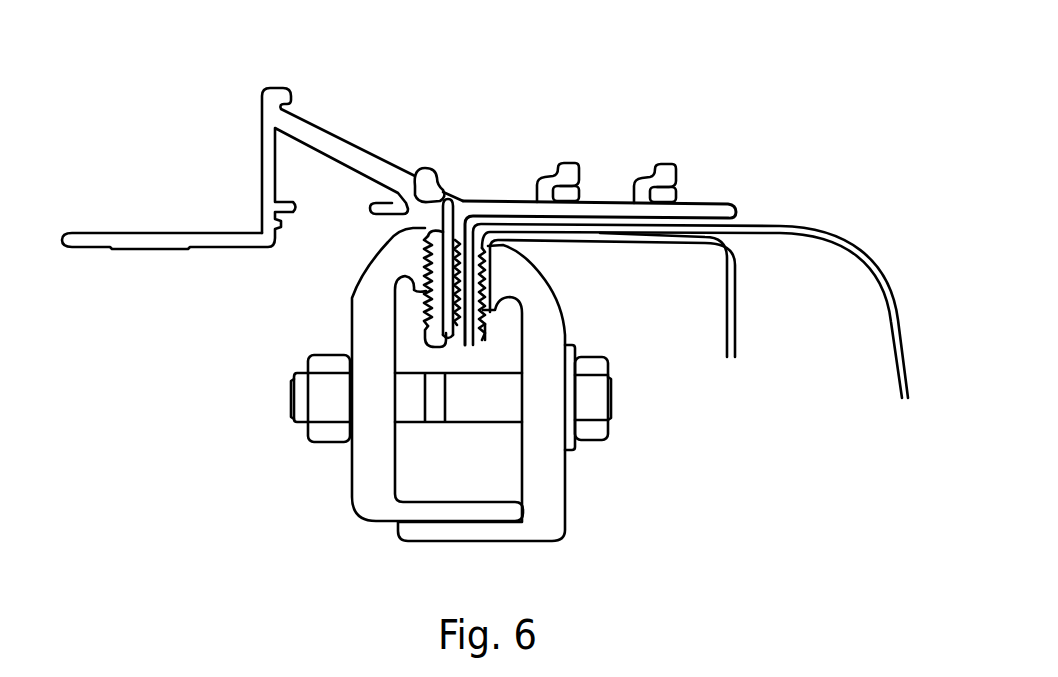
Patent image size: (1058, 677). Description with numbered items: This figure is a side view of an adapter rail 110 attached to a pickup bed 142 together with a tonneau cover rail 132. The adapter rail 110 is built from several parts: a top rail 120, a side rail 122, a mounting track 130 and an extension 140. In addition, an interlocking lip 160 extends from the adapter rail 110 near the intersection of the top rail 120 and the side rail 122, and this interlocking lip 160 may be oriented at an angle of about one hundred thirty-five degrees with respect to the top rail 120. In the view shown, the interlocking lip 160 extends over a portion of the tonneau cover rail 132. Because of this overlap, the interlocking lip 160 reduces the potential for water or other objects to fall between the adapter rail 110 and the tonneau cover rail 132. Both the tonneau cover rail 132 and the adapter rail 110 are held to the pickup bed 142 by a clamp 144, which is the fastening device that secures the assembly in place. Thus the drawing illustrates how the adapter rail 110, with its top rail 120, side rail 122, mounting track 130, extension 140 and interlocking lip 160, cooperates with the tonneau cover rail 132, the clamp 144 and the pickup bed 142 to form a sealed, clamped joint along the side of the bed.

The adapter rail 110 is at (484, 125).
The top rail 120 is at (713, 205).
The side rail 122 is at (462, 321).
The mounting track 130 is at (664, 183).
The tonneau cover rail 132 is at (147, 270).
The extension 140 is at (462, 348).
The pickup bed 142 is at (768, 235).
The clamp 144 is at (368, 511).
The interlocking lip 160 is at (452, 187).